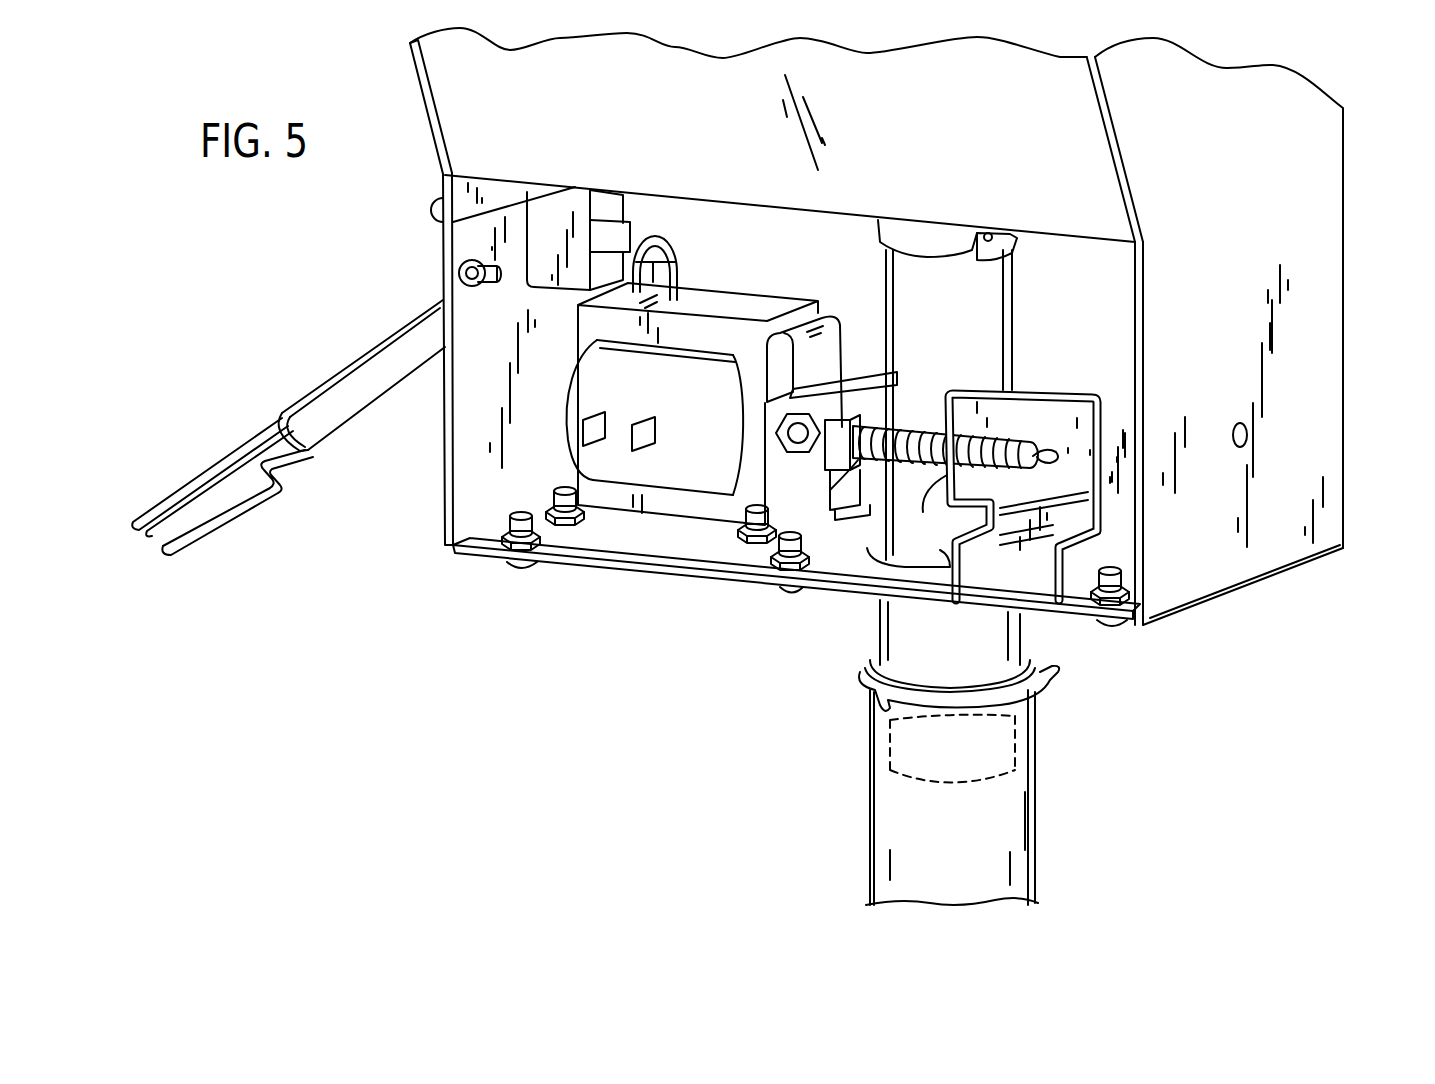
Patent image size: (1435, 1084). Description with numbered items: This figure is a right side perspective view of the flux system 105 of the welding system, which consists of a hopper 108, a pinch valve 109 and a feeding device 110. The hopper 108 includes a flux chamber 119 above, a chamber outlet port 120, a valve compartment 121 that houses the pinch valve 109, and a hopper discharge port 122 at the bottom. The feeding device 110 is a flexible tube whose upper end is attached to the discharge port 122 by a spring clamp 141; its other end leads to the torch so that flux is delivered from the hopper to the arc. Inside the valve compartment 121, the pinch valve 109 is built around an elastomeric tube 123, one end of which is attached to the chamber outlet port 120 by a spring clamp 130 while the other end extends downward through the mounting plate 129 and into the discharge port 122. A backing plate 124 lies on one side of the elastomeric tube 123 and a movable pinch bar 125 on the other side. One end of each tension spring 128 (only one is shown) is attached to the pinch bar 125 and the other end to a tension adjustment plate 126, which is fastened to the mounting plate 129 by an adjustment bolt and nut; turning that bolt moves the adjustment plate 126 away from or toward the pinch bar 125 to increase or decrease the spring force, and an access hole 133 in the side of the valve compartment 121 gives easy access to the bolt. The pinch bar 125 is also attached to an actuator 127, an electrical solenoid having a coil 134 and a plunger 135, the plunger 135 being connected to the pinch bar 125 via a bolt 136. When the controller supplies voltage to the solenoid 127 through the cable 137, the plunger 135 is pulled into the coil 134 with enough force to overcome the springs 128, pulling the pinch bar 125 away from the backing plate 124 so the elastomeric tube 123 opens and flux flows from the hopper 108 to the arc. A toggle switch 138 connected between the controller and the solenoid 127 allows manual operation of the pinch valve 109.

The flux system 105 is at (366, 630).
The hopper 108 is at (1322, 150).
The pinch valve 109 is at (708, 214).
The feeding device 110 is at (877, 840).
The flux chamber 119 is at (441, 90).
The chamber outlet port 120 is at (932, 246).
The valve compartment 121 is at (472, 432).
The hopper discharge port 122 is at (878, 610).
The elastomeric tube 123 is at (1003, 303).
The backing plate 124 is at (940, 477).
The movable pinch bar 125 is at (857, 460).
The tension adjustment plate 126 is at (1088, 426).
The actuator 127 is at (618, 512).
The tension springs 128 is at (915, 430).
The mounting plate 129 is at (1113, 583).
The spring clamp 130 is at (893, 233).
The access hole 133 is at (1250, 436).
The coil 134 is at (585, 395).
The plunger 135 is at (838, 328).
The bolt 136 is at (780, 418).
The cable 137 is at (322, 435).
The toggle switch 138 is at (460, 266).
The spring clamp 141 is at (853, 692).